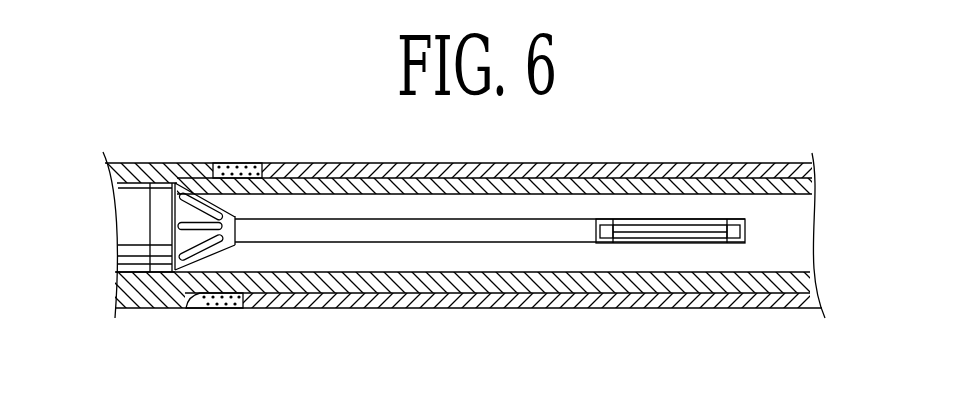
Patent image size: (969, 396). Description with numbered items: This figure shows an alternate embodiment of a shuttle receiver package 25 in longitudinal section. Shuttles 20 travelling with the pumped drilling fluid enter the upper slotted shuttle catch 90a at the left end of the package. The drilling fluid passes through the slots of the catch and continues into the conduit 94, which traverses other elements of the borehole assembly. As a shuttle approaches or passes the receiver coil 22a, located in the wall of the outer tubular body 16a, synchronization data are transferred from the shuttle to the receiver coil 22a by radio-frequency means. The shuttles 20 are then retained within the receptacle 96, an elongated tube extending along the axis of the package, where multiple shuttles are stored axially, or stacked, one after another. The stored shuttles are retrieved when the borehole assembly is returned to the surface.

The outer tubular member 16a is at (350, 168).
The receiver coil 22a is at (245, 166).
The receiver package 25 is at (125, 166).
The upper slotted shuttle catch 90a is at (177, 165).
The receptacle 96 is at (403, 225).
The shuttles 20 is at (662, 228).
The conduit 94 is at (772, 215).